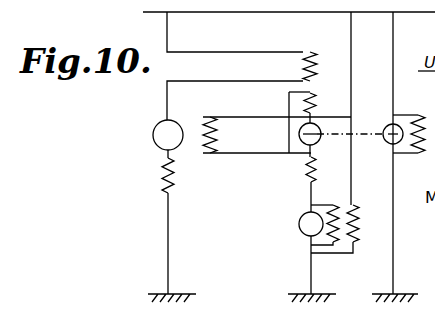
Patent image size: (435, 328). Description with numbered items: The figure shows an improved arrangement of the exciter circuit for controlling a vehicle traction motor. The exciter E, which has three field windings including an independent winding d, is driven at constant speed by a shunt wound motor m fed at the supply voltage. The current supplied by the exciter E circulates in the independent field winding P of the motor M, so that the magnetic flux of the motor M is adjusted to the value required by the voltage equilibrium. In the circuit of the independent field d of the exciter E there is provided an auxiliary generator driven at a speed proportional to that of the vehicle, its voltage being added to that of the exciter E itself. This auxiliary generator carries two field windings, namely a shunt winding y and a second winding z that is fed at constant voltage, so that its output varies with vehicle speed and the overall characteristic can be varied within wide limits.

The motor M is at (168, 135).
The exciter E is at (315, 135).
The shunt wound motor m is at (389, 127).
The independent winding d is at (299, 170).
The independent field winding P is at (298, 226).
The shunt winding y is at (325, 213).
The winding z is at (341, 229).